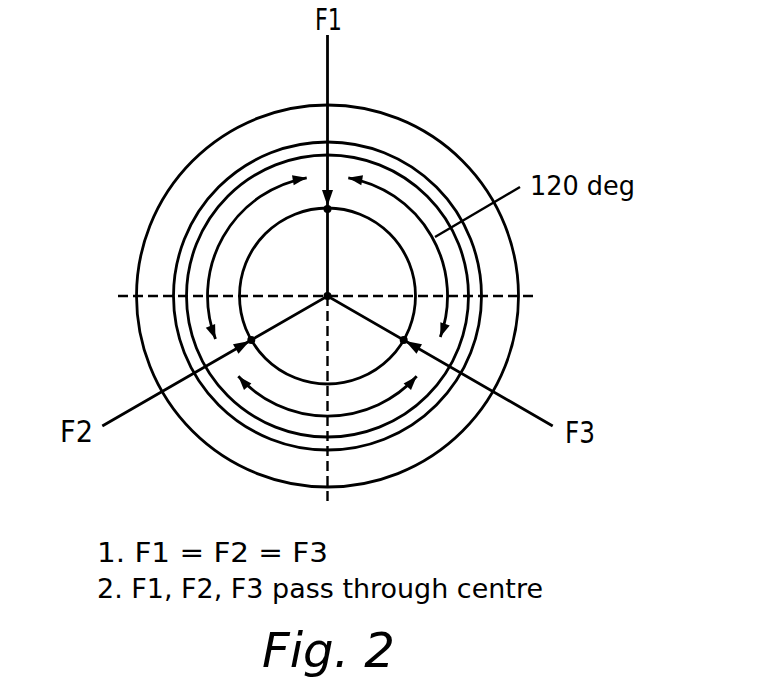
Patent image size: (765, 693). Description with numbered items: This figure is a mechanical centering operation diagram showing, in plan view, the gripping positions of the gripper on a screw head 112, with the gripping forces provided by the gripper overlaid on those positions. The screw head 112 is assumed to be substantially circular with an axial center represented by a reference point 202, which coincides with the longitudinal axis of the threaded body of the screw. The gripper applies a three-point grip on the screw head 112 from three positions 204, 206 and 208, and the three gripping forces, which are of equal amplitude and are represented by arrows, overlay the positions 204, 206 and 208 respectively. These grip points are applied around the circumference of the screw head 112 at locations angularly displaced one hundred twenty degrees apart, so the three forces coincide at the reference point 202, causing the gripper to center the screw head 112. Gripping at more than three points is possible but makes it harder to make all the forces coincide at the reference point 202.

The screw head 112 is at (387, 280).
The reference point 202 is at (328, 296).
The gripping position 204 is at (328, 209).
The gripping position 206 is at (252, 338).
The gripping position 208 is at (403, 340).